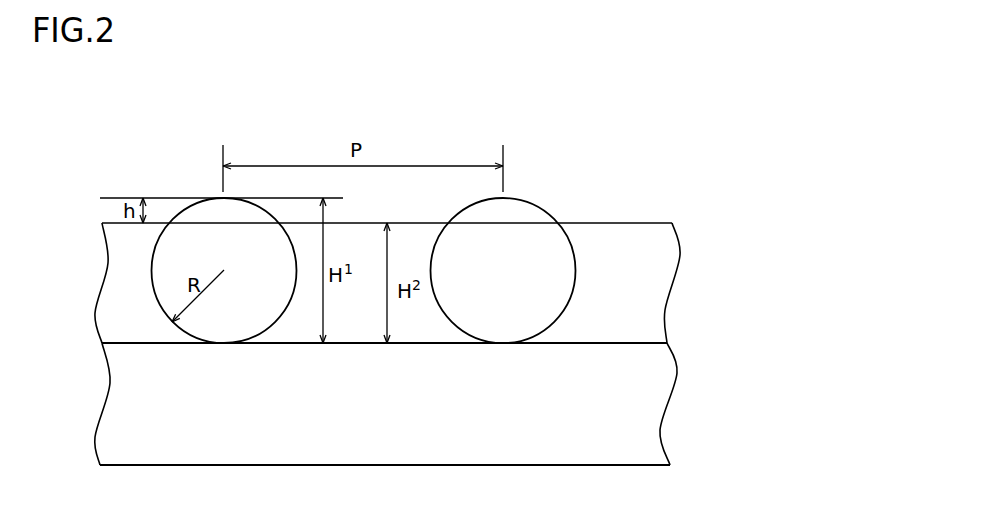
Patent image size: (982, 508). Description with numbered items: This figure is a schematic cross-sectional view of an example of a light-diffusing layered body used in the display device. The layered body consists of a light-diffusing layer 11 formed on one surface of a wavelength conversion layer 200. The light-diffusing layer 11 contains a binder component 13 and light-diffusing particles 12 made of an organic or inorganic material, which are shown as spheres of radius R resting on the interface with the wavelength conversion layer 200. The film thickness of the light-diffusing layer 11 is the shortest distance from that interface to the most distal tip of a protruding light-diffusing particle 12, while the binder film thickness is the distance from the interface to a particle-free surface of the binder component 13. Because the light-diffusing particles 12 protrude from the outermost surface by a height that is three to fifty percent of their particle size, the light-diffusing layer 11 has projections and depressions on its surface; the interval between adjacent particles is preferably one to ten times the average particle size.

The light-diffusing layer 11 is at (685, 230).
The light-diffusing particles 12 is at (177, 257).
The binder component 13 is at (612, 297).
The wavelength conversion layer 200 is at (680, 417).